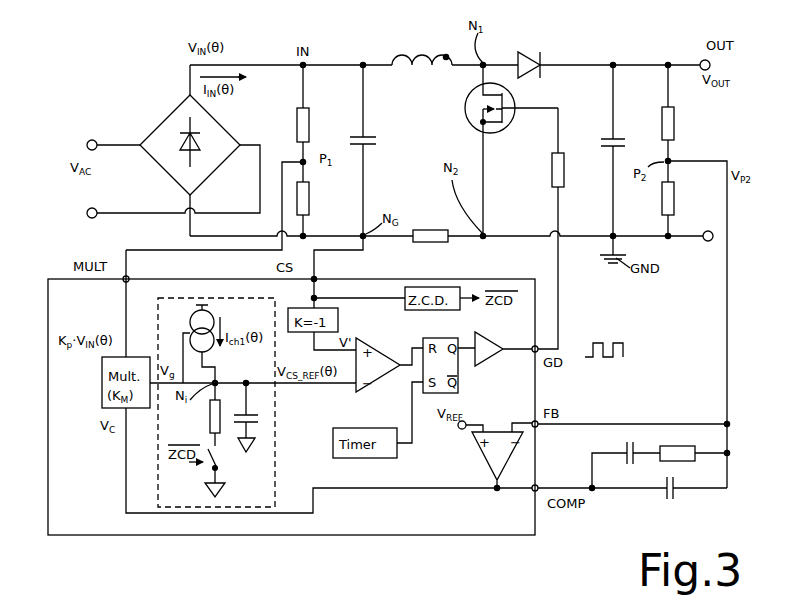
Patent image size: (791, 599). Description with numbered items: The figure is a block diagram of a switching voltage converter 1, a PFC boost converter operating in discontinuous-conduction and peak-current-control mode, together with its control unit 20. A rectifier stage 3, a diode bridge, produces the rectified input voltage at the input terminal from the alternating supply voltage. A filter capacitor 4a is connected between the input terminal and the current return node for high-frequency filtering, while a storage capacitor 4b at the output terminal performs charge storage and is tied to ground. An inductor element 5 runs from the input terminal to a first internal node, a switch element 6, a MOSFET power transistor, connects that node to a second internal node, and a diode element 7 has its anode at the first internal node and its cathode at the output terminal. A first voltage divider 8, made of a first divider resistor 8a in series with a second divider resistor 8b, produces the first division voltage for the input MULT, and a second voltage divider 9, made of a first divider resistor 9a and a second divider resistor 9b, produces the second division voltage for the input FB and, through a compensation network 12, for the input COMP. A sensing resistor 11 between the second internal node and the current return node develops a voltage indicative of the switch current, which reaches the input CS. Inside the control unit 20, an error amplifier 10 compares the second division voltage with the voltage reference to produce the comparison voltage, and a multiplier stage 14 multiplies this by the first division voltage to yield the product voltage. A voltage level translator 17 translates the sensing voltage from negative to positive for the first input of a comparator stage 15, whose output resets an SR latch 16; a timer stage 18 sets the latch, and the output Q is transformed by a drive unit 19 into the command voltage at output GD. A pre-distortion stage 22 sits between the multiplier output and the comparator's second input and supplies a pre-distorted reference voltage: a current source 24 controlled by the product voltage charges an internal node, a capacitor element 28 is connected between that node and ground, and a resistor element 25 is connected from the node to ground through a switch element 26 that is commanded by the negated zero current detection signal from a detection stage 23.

The voltage converter 1 is at (120, 80).
The rectifier stage 3 is at (160, 130).
The filter capacitor 4a is at (377, 140).
The storage capacitor 4b is at (604, 148).
The inductor element 5 is at (405, 67).
The switch element 6 is at (466, 116).
The diode element 7 is at (528, 56).
The first voltage divider 8 is at (233, 157).
The first divider resistor 8a is at (310, 122).
The second divider resistor 8b is at (310, 208).
The second voltage divider 9 is at (678, 276).
The first divider resistor 9a is at (676, 120).
The second divider resistor 9b is at (676, 203).
The error amplifier 10 is at (483, 460).
The sensing resistor 11 is at (430, 229).
The compensation network 12 is at (648, 503).
The multiplier stage 14 is at (102, 407).
The comparator stage 15 is at (385, 360).
The SR latch 16 is at (458, 391).
The voltage level translator 17 is at (338, 320).
The timer stage 18 is at (386, 459).
The drive unit 19 is at (488, 357).
The control unit 20 is at (168, 533).
The pre-distortion stage 22 is at (213, 402).
The detection stage 23 is at (458, 311).
The current source 24 is at (190, 330).
The resistor element 25 is at (210, 420).
The switch element 26 is at (213, 450).
The capacitor element 28 is at (258, 415).